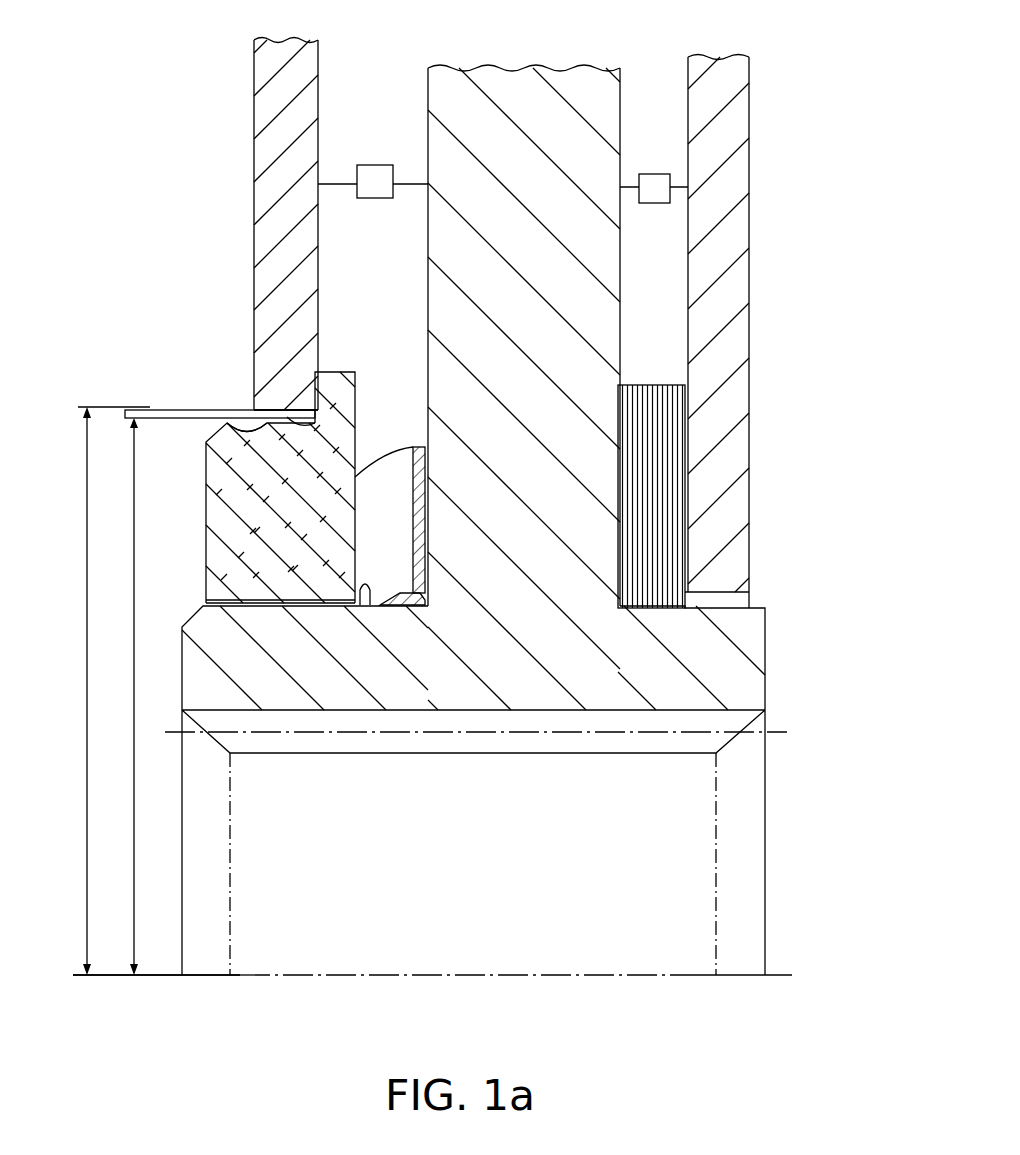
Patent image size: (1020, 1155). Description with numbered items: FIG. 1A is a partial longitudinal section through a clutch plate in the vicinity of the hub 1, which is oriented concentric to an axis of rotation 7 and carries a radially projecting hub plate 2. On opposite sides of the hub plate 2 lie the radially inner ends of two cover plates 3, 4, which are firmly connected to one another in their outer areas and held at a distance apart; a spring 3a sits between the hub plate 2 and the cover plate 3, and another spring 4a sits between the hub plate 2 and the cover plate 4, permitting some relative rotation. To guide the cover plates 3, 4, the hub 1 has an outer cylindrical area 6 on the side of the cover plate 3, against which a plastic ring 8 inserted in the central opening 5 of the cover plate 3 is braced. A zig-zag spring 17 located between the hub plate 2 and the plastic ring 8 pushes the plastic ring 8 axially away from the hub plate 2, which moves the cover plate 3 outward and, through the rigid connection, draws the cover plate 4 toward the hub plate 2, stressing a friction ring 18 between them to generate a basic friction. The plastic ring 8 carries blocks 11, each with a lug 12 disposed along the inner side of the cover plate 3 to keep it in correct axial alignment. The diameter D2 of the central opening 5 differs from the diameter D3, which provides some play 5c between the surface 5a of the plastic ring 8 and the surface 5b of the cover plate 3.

The hub 1 is at (725, 670).
The hub plate 2 is at (586, 237).
The cover plate 3 is at (275, 112).
The spring 3a is at (375, 165).
The cover plate 4 is at (730, 113).
The spring 4a is at (656, 174).
The central opening 5 is at (300, 424).
The surface of the plastic ring 5a is at (232, 423).
The surface of the cover plate 5b is at (277, 400).
The play 5c is at (158, 420).
The cylindrical area 6 is at (364, 598).
The axis of rotation 7 is at (772, 975).
The plastic ring 8 is at (192, 542).
The block 11 is at (225, 485).
The lug 12 is at (335, 385).
The zig-zag spring 17 is at (380, 560).
The friction ring 18 is at (663, 425).
The diameter of the central opening D2 is at (97, 691).
The diameter D3 is at (119, 696).